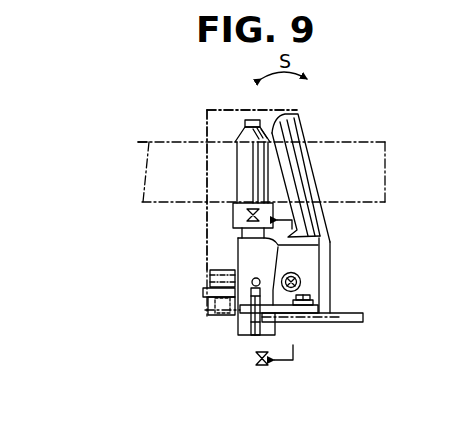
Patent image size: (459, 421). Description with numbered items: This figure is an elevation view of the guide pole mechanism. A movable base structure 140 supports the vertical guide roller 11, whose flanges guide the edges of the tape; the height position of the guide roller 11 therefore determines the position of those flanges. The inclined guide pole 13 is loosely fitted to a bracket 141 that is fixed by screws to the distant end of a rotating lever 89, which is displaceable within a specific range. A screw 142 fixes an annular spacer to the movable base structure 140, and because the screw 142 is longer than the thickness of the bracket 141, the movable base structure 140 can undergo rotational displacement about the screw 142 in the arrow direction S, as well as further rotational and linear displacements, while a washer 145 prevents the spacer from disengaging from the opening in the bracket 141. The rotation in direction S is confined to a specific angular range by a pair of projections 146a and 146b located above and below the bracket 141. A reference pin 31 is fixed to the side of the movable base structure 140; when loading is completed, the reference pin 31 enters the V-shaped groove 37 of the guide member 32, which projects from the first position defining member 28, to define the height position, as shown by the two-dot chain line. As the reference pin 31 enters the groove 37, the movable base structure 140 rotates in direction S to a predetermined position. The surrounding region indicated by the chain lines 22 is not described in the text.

The guide roller 11 is at (240, 163).
The guide pole 13 is at (300, 128).
The housing 22 is at (164, 143).
The first position defining member 28 is at (207, 110).
The reference pin 31 is at (205, 292).
The guide member 32 is at (207, 272).
The V-shaped groove 37 is at (206, 282).
The rotating lever 89 is at (347, 323).
The movable base structure 140 is at (234, 256).
The bracket 141 is at (312, 284).
The screw 142 is at (301, 280).
The washer 145 is at (312, 244).
The projection 146a is at (243, 292).
The projection 146b is at (252, 328).